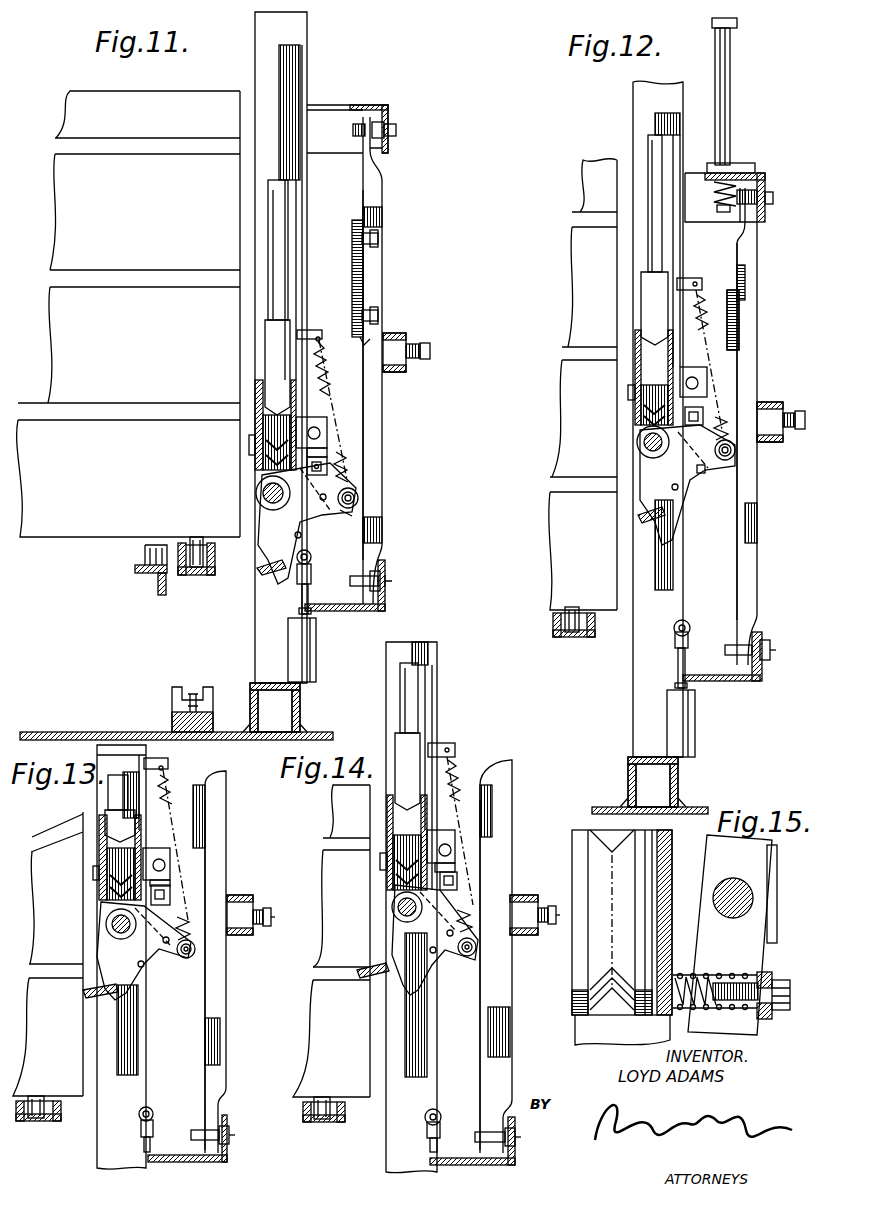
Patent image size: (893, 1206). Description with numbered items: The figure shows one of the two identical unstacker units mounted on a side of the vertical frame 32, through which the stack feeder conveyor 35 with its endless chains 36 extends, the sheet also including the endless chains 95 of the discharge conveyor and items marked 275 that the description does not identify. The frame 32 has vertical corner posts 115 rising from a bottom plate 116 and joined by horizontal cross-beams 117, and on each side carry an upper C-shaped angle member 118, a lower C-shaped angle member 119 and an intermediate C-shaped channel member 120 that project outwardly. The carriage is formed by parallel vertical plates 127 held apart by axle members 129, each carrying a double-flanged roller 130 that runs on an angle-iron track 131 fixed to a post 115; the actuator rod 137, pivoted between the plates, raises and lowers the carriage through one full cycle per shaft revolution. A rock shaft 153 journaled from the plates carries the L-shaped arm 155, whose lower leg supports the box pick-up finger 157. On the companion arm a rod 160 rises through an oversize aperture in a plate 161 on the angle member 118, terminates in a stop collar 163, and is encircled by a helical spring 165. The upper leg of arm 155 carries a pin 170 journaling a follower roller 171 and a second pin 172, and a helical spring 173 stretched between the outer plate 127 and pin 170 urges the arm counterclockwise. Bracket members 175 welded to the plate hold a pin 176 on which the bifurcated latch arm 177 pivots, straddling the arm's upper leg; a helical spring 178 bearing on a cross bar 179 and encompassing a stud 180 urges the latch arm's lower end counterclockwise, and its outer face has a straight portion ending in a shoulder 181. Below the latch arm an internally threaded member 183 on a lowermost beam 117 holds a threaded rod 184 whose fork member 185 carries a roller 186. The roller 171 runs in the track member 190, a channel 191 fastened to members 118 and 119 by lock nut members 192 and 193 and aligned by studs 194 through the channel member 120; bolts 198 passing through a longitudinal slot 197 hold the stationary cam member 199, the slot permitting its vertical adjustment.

In FIG. 12, the vertical frame 32 is at (623, 103).
In FIG. 14, the vertical frame 32 is at (447, 684).
In FIG. 11, the stack feeder conveyor 35 is at (184, 538).
In FIG. 12, the stack feeder conveyor 35 is at (583, 612).
In FIG. 13, the stack feeder conveyor 35 is at (50, 1100).
In FIG. 14, the stack feeder conveyor 35 is at (324, 1109).
In FIG. 11, the endless chains 36 is at (192, 576).
In FIG. 12, the endless chains 36 is at (570, 637).
In FIG. 13, the endless chains 36 is at (38, 1122).
In FIG. 14, the endless chains 36 is at (324, 1123).
In FIG. 11, the endless chains 95 is at (135, 553).
In FIG. 11, the vertical corner posts 115 is at (300, 32).
In FIG. 12, the vertical corner posts 115 is at (640, 110).
In FIG. 13, the vertical corner posts 115 is at (121, 957).
In FIG. 14, the vertical corner posts 115 is at (411, 907).
In FIG. 15, the vertical corner posts 115 is at (575, 1032).
In FIG. 11, the bottom plate 116 is at (72, 732).
In FIG. 12, the bottom plate 116 is at (603, 807).
In FIG. 11, the horizontal cross-beams 117 is at (300, 709).
In FIG. 12, the horizontal cross-beams 117 is at (680, 787).
In FIG. 11, the upper C-shaped angle member 118 is at (378, 104).
In FIG. 12, the upper C-shaped angle member 118 is at (766, 183).
In FIG. 11, the lower C-shaped angle member 119 is at (386, 607).
In FIG. 12, the lower C-shaped angle member 119 is at (746, 681).
In FIG. 13, the lower C-shaped angle member 119 is at (228, 1158).
In FIG. 14, the lower C-shaped angle member 119 is at (498, 1165).
In FIG. 11, the intermediate C-shaped channel member 120 is at (400, 371).
In FIG. 12, the intermediate C-shaped channel member 120 is at (780, 441).
In FIG. 13, the intermediate C-shaped channel member 120 is at (260, 915).
In FIG. 14, the intermediate C-shaped channel member 120 is at (520, 936).
In FIG. 11, the parallel vertical plates 127 is at (258, 390).
In FIG. 12, the parallel vertical plates 127 is at (637, 372).
In FIG. 13, the parallel vertical plates 127 is at (100, 819).
In FIG. 14, the parallel vertical plates 127 is at (388, 818).
In FIG. 15, the parallel vertical plates 127 is at (660, 1035).
In FIG. 11, the axle members 129 is at (253, 445).
In FIG. 12, the axle members 129 is at (630, 392).
In FIG. 13, the axle members 129 is at (96, 872).
In FIG. 14, the axle members 129 is at (382, 860).
In FIG. 11, the double-flanged wheel or roller 130 is at (265, 460).
In FIG. 12, the double-flanged wheel or roller 130 is at (650, 403).
In FIG. 13, the double-flanged wheel or roller 130 is at (110, 882).
In FIG. 14, the double-flanged wheel or roller 130 is at (395, 878).
In FIG. 15, the double-flanged wheel or roller 130 is at (595, 857).
In FIG. 11, the track 131 is at (295, 68).
In FIG. 12, the track 131 is at (665, 552).
In FIG. 13, the track 131 is at (130, 1058).
In FIG. 14, the track 131 is at (416, 1042).
In FIG. 12, the actuator rod 137 is at (650, 145).
In FIG. 13, the actuator rod 137 is at (120, 808).
In FIG. 14, the actuator rod 137 is at (412, 712).
In FIG. 11, the rock shaft 153 is at (270, 490).
In FIG. 12, the rock shaft 153 is at (645, 440).
In FIG. 13, the rock shaft 153 is at (106, 924).
In FIG. 14, the rock shaft 153 is at (392, 910).
In FIG. 11, the L-shaped arm 155 is at (268, 520).
In FIG. 12, the L-shaped arm 155 is at (642, 466).
In FIG. 13, the L-shaped arm 155 is at (105, 943).
In FIG. 14, the L-shaped arm 155 is at (390, 935).
In FIG. 11, the box pick-up finger or bar 157 is at (275, 575).
In FIG. 12, the box pick-up finger or bar 157 is at (642, 515).
In FIG. 13, the box pick-up finger or bar 157 is at (88, 995).
In FIG. 14, the box pick-up finger or bar 157 is at (372, 967).
In FIG. 12, the rod 160 is at (730, 90).
In FIG. 12, the plate 161 is at (745, 165).
In FIG. 12, the stop collar 163 is at (737, 22).
In FIG. 12, the helical spring 165 is at (713, 207).
In FIG. 11, the pin 170 is at (359, 498).
In FIG. 12, the pin 170 is at (735, 452).
In FIG. 13, the pin 170 is at (196, 955).
In FIG. 14, the pin 170 is at (468, 957).
In FIG. 11, the roller or follower member 171 is at (358, 490).
In FIG. 12, the roller or follower member 171 is at (735, 460).
In FIG. 13, the roller or follower member 171 is at (196, 949).
In FIG. 14, the roller or follower member 171 is at (478, 952).
In FIG. 11, the second pin 172 is at (352, 516).
In FIG. 12, the second pin 172 is at (718, 470).
In FIG. 13, the second pin 172 is at (168, 945).
In FIG. 14, the second pin 172 is at (450, 940).
In FIG. 11, the helical spring 173 is at (330, 385).
In FIG. 12, the helical spring 173 is at (710, 315).
In FIG. 13, the helical spring 173 is at (172, 776).
In FIG. 14, the helical spring 173 is at (455, 766).
In FIG. 11, the bracket members 175 is at (325, 422).
In FIG. 12, the bracket members 175 is at (703, 378).
In FIG. 13, the bracket members 175 is at (172, 855).
In FIG. 14, the bracket members 175 is at (456, 845).
In FIG. 11, the pin 176 is at (318, 433).
In FIG. 12, the pin 176 is at (698, 383).
In FIG. 13, the pin 176 is at (165, 865).
In FIG. 14, the pin 176 is at (451, 850).
In FIG. 15, the pin 176 is at (734, 878).
In FIG. 11, the bifurcated latch arm 177 is at (318, 455).
In FIG. 13, the bifurcated latch arm 177 is at (165, 883).
In FIG. 14, the bifurcated latch arm 177 is at (455, 868).
In FIG. 15, the bifurcated latch arm 177 is at (685, 855).
In FIG. 15, the helical spring 178 is at (752, 976).
In FIG. 12, the cross bar 179 is at (705, 412).
In FIG. 15, the cross bar 179 is at (763, 1020).
In FIG. 11, the stud 180 is at (330, 462).
In FIG. 13, the stud 180 is at (170, 892).
In FIG. 14, the stud 180 is at (458, 882).
In FIG. 15, the stud 180 is at (722, 1008).
In FIG. 11, the shoulder 181 is at (310, 503).
In FIG. 12, the shoulder 181 is at (700, 485).
In FIG. 13, the shoulder 181 is at (145, 963).
In FIG. 14, the shoulder 181 is at (433, 950).
In FIG. 11, the internally threaded member 183 is at (316, 647).
In FIG. 12, the internally threaded member 183 is at (695, 727).
In FIG. 11, the threaded rod 184 is at (302, 600).
In FIG. 12, the threaded rod 184 is at (678, 665).
In FIG. 13, the threaded rod 184 is at (144, 1147).
In FIG. 14, the threaded rod 184 is at (430, 1147).
In FIG. 11, the fork member 185 is at (311, 568).
In FIG. 12, the fork member 185 is at (677, 638).
In FIG. 13, the fork member 185 is at (141, 1126).
In FIG. 14, the fork member 185 is at (427, 1126).
In FIG. 11, the roller 186 is at (311, 555).
In FIG. 12, the roller 186 is at (688, 622).
In FIG. 13, the roller 186 is at (150, 1110).
In FIG. 14, the roller 186 is at (438, 1108).
In FIG. 11, the track member 190 is at (392, 190).
In FIG. 12, the track member 190 is at (765, 284).
In FIG. 13, the track member 190 is at (235, 803).
In FIG. 14, the track member 190 is at (519, 788).
In FIG. 11, the channel 191 is at (374, 199).
In FIG. 12, the channel 191 is at (752, 297).
In FIG. 13, the channel 191 is at (215, 1005).
In FIG. 14, the channel 191 is at (500, 795).
In FIG. 11, the lock nut members 192 is at (397, 127).
In FIG. 11, the lock nut members 193 is at (392, 580).
In FIG. 12, the lock nut members 193 is at (776, 650).
In FIG. 13, the lock nut members 193 is at (236, 1134).
In FIG. 11, the studs 194 is at (430, 349).
In FIG. 12, the studs 194 is at (798, 410).
In FIG. 13, the studs 194 is at (272, 919).
In FIG. 14, the studs 194 is at (522, 1137).
In FIG. 11, the longitudinal slot 197 is at (368, 340).
In FIG. 11, the bolts 198 is at (380, 316).
In FIG. 11, the stationary cam member 199 is at (360, 268).
In FIG. 11, the stacked articles 275 is at (128, 314).
In FIG. 12, the stacked articles 275 is at (580, 311).
In FIG. 13, the stacked articles 275 is at (48, 954).
In FIG. 14, the stacked articles 275 is at (331, 941).